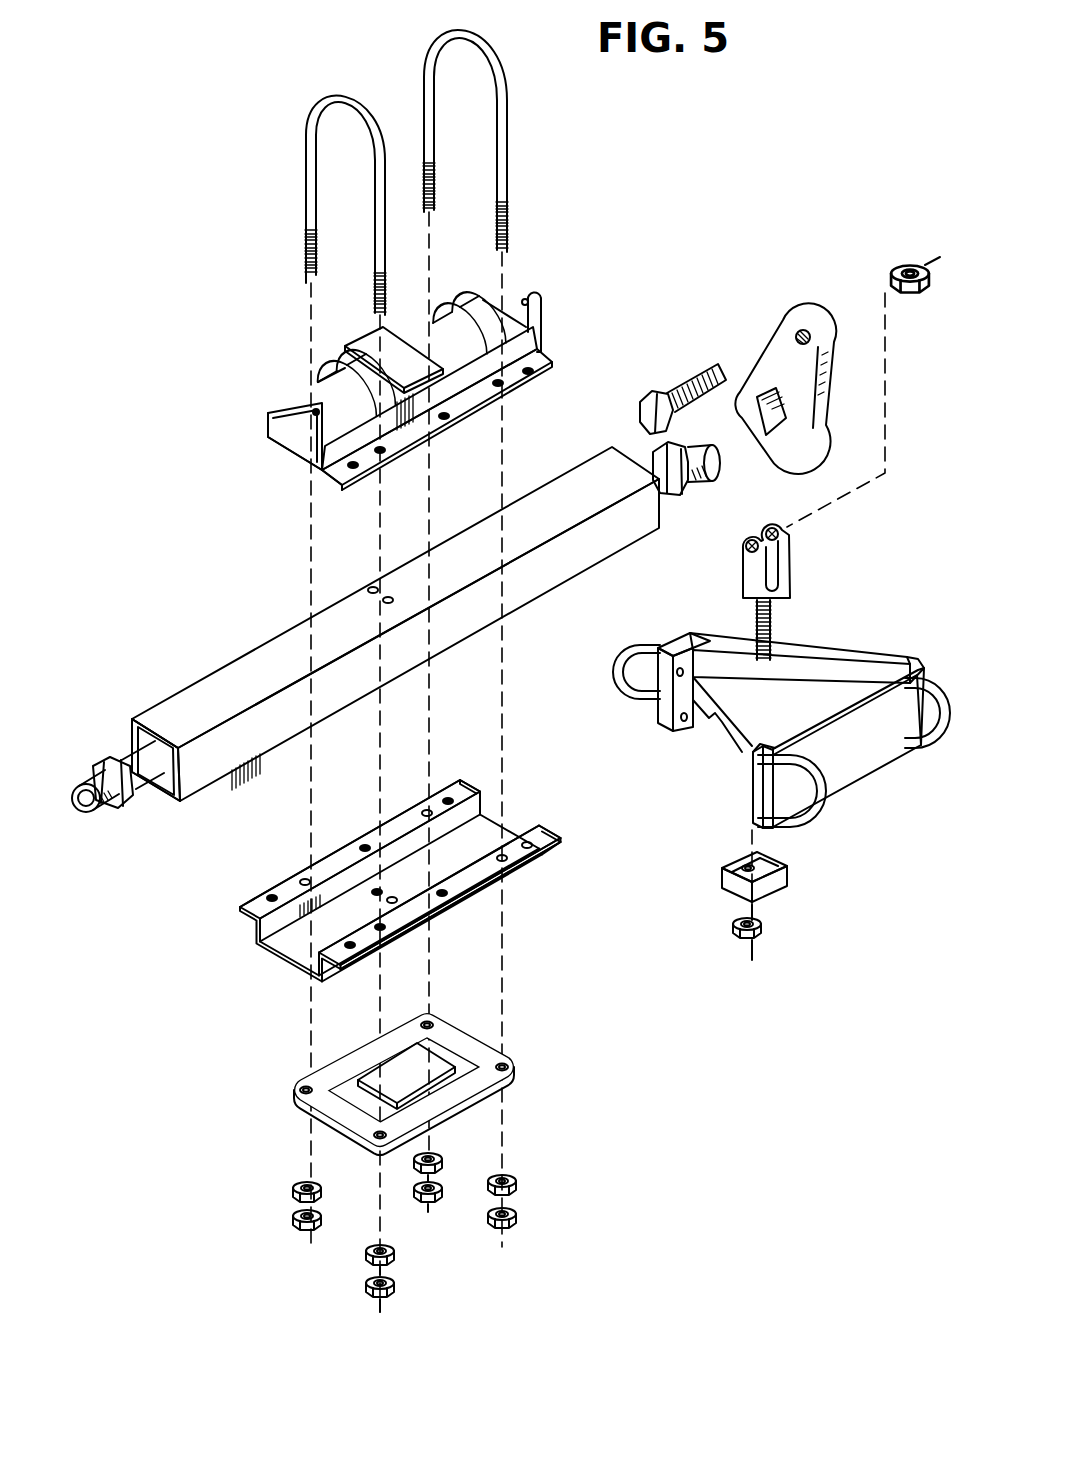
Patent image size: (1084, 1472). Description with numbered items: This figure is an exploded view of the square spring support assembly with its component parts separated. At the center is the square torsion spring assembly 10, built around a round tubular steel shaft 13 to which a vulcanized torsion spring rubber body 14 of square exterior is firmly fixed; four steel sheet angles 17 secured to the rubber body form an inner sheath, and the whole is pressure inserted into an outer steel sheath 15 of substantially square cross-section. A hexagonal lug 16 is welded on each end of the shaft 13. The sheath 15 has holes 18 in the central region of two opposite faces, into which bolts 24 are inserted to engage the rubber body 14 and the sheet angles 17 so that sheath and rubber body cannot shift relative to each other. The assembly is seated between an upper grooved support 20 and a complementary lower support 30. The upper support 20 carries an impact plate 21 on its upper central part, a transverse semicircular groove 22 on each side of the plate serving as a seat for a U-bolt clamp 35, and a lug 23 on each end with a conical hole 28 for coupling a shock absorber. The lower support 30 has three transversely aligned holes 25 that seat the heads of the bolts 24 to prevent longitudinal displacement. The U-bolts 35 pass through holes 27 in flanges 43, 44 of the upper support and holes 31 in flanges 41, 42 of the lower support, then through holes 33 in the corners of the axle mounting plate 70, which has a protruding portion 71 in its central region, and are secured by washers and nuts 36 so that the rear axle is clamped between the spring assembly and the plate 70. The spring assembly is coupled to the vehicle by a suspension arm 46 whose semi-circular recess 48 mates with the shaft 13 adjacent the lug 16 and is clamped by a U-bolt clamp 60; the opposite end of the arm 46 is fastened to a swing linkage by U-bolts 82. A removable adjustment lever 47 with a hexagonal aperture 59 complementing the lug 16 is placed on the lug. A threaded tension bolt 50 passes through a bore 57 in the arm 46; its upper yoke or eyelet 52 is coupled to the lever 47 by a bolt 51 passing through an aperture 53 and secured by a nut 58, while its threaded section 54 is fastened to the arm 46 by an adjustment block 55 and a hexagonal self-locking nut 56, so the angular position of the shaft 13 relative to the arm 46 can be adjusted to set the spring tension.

The square tubular beam 10 is at (550, 578).
The tubular steel shaft 13 is at (90, 815).
The torsion spring rubber body 14 is at (178, 798).
The outer steel sheath 15 is at (222, 772).
The hexagonal lug 16 is at (118, 765).
The steel sheet angles 17 is at (158, 752).
The holes 18 is at (396, 600).
The upper grooved support 20 is at (524, 346).
The impact plate 21 is at (350, 343).
The transverse semicircular groove 22 is at (340, 382).
The lug 23 is at (318, 440).
The bolt 24 is at (366, 592).
The transversely aligned holes 25 is at (370, 888).
The holes 27 is at (506, 388).
The conical hole 28 is at (312, 416).
The lower support 30 is at (262, 930).
The holes 31 is at (522, 870).
The holes 33 is at (296, 1089).
The U-bolt type clamp 35 is at (350, 95).
The washers and nuts 36 is at (517, 1216).
The flange 41 is at (536, 838).
The flange 42 is at (452, 793).
The flange 43 is at (332, 478).
The flange 44 is at (262, 420).
The suspension arm 46 is at (720, 735).
The adjustment lever 47 is at (800, 320).
The semi-circular recess 48 is at (640, 690).
The threaded tension bolt 50 is at (812, 548).
The bolt 51 is at (690, 382).
The yoke or eyelet 52 is at (746, 552).
The aperture 53 is at (797, 330).
The threaded section 54 is at (773, 620).
The adjustment block 55 is at (772, 878).
The hexagonal self-locking nut 56 is at (766, 930).
The bore 57 is at (808, 688).
The nut 58 is at (893, 265).
The hexagonal aperture 59 is at (790, 425).
The U-bolt clamp 60 is at (662, 718).
The axle mounting plate 70 is at (458, 1085).
The protruding portion 71 is at (440, 1050).
The U-bolts 82 is at (935, 742).